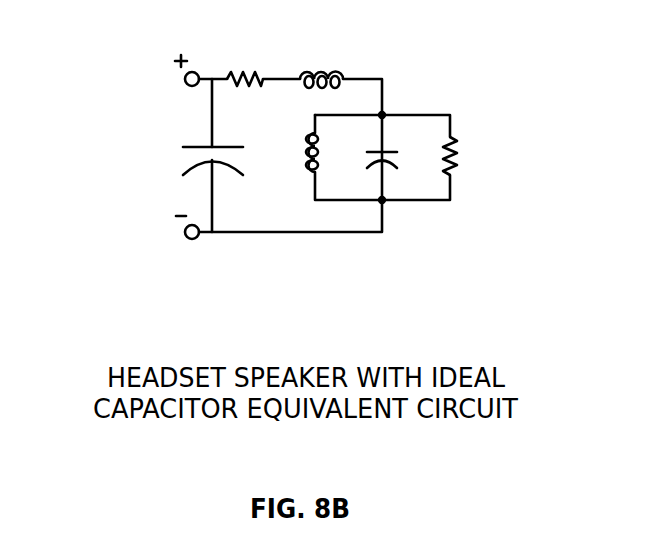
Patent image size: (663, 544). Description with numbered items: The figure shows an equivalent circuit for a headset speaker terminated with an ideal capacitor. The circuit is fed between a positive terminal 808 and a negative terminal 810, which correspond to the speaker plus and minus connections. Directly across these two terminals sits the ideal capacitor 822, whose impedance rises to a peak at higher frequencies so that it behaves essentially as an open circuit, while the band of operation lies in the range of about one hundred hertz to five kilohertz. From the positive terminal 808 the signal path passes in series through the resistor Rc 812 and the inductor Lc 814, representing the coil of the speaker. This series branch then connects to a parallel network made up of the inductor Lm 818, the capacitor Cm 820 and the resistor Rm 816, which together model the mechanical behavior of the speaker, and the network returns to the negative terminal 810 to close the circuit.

The positive terminal 808 is at (185, 79).
The negative terminal 810 is at (185, 232).
The resistor Rc 812 is at (240, 72).
The inductor Lc 814 is at (320, 71).
The resistor Rm 816 is at (460, 152).
The inductor Lm 818 is at (290, 157).
The capacitor Cm 820 is at (390, 131).
The ideal capacitor 822 is at (185, 162).